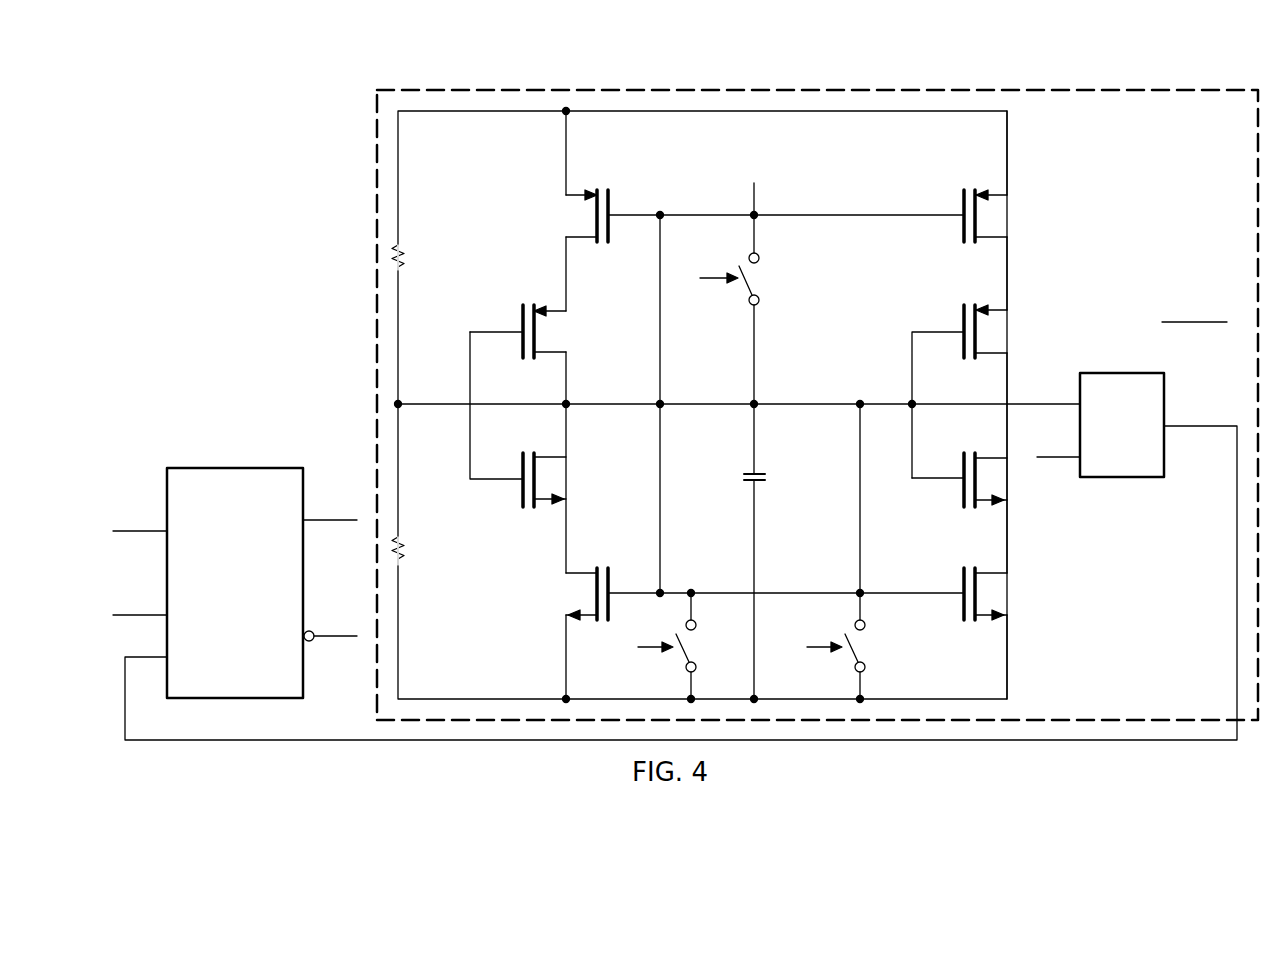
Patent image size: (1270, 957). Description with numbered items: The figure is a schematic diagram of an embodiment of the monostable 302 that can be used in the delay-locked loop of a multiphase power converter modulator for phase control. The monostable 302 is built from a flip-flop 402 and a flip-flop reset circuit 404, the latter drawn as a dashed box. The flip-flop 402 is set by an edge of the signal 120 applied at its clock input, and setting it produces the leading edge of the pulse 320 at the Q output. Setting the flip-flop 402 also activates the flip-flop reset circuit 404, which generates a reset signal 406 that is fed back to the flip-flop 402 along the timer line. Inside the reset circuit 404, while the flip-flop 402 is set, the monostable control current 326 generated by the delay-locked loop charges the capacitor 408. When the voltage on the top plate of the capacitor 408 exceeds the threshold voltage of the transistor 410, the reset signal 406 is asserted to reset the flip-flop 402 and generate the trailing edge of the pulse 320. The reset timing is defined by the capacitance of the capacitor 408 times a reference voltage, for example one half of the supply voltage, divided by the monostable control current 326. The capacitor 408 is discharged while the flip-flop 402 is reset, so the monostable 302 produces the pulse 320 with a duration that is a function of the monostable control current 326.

The monostable 302 is at (278, 106).
The flip-flop reset circuit 404 is at (861, 82).
The flip-flop 402 is at (236, 466).
The signal 120 is at (147, 533).
The pulse 320 is at (325, 526).
The reset signal 406 is at (123, 698).
The monostable control current 326 is at (757, 193).
The capacitor 408 is at (768, 481).
The transistor 410 is at (962, 487).